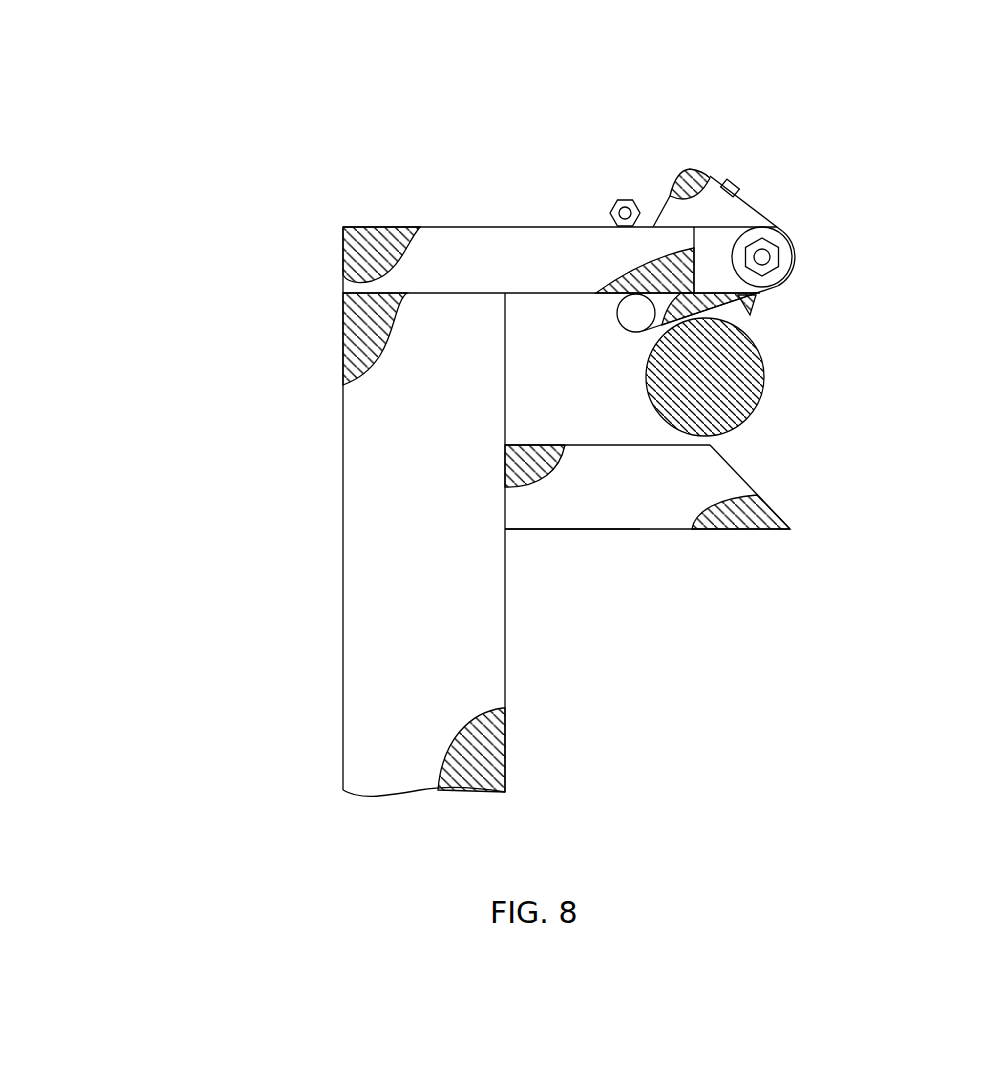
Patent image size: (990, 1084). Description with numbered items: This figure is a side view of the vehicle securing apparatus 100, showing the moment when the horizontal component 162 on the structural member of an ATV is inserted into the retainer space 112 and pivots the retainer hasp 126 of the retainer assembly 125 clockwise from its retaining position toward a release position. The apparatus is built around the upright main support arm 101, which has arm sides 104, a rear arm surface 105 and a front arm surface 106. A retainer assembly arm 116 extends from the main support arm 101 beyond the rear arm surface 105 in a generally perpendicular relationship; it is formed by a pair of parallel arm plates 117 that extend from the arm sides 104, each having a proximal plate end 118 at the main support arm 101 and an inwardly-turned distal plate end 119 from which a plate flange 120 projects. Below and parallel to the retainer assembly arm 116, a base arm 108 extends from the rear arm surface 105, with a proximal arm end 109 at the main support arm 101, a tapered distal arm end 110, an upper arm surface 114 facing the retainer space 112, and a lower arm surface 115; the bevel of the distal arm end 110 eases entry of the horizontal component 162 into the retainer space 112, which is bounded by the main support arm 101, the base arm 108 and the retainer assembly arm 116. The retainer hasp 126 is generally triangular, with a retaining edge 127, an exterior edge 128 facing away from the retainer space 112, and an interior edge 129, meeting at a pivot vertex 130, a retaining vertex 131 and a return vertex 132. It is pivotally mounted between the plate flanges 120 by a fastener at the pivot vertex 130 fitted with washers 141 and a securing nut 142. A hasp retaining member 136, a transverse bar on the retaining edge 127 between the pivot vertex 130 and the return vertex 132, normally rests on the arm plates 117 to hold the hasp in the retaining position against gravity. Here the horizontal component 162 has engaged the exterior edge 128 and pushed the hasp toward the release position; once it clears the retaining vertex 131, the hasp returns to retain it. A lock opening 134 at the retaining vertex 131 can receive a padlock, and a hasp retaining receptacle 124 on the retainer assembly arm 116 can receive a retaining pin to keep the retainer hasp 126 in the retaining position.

The vehicle securing apparatus 100 is at (176, 112).
The main support arm 101 is at (333, 545).
The arm sides 104 is at (375, 673).
The rear arm surface 105 is at (506, 660).
The front arm surface 106 is at (343, 628).
The base arm 108 is at (672, 542).
The proximal arm end 109 is at (503, 481).
The distal arm end 110 is at (755, 472).
The retainer space 112 is at (519, 311).
The upper arm surface 114 is at (535, 442).
The lower arm surface 115 is at (531, 532).
The retainer assembly arm 116 is at (321, 210).
The arm plates 117 is at (476, 215).
The proximal plate ends 118 is at (343, 257).
The distal plate ends 119 is at (718, 250).
The plate flanges 120 is at (772, 222).
The hasp retaining receptacle 124 is at (611, 203).
The retainer assembly 125 is at (892, 124).
The retainer hasp 126 is at (757, 315).
The retaining edge 127 is at (728, 175).
The exterior edge 128 is at (750, 326).
The interior edge 129 is at (662, 198).
The pivot vertex 130 is at (795, 266).
The retaining vertex 131 is at (620, 329).
The return vertex 132 is at (674, 186).
The lock opening 134 is at (615, 310).
The hasp retaining member 136 is at (738, 182).
The washers 141 is at (789, 236).
The securing nut 142 is at (782, 244).
The horizontal component 162 is at (766, 372).